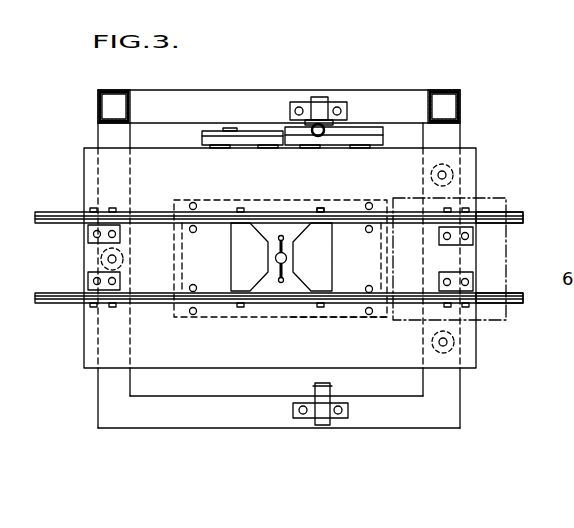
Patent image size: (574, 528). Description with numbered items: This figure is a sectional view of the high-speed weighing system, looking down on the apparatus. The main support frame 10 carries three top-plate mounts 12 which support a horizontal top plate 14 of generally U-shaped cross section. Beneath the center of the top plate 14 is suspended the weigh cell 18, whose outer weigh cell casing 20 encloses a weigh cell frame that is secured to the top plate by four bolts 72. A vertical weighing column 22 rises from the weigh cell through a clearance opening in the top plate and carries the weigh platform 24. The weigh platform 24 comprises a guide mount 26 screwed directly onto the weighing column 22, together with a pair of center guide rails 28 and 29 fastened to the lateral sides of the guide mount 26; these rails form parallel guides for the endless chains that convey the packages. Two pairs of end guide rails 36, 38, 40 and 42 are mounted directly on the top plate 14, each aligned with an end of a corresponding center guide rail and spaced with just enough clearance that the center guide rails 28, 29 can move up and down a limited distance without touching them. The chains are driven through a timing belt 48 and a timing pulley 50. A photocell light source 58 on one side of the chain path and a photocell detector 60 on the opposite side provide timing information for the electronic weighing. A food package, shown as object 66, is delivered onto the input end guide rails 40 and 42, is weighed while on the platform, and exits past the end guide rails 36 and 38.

The main support frame 10 is at (104, 419).
The top-plate mounts 12 is at (100, 260).
The top plate 14 is at (222, 360).
The weigh cell 18 is at (173, 242).
The weigh cell casing 20 is at (178, 282).
The weighing column 22 is at (276, 258).
The weigh platform 24 is at (278, 318).
The guide mount 26 is at (302, 283).
The center guide rail 28 is at (342, 318).
The center guide rail 29 is at (328, 214).
The end guide rail 36 is at (520, 211).
The end guide rail 38 is at (512, 305).
The end guide rail 40 is at (45, 210).
The end guide rail 42 is at (60, 306).
The timing belt 48 is at (267, 136).
The timing pulley 50 is at (381, 128).
The photocell light source 58 is at (318, 136).
The photocell detector 60 is at (315, 391).
The object 66 is at (508, 265).
The bolts 72 is at (196, 232).